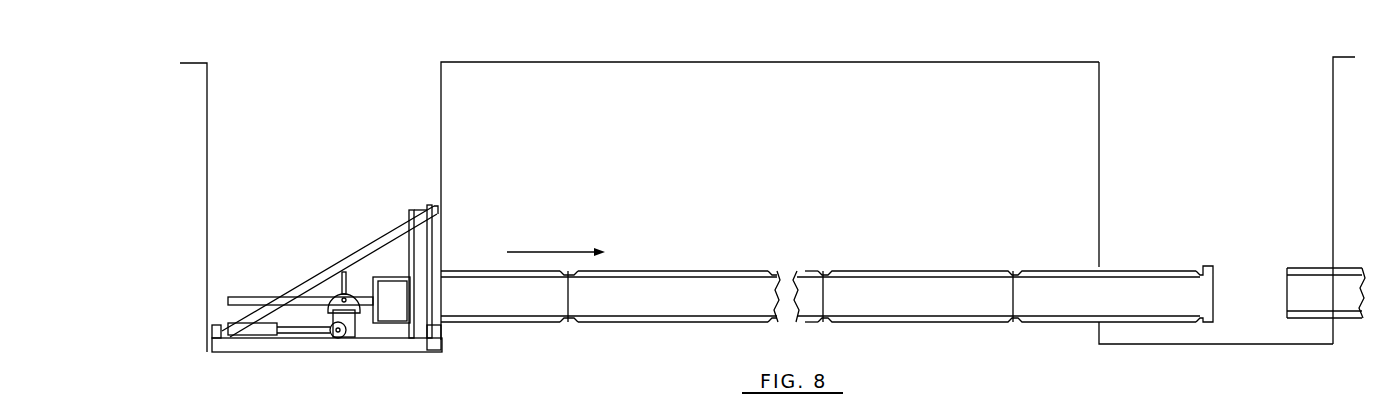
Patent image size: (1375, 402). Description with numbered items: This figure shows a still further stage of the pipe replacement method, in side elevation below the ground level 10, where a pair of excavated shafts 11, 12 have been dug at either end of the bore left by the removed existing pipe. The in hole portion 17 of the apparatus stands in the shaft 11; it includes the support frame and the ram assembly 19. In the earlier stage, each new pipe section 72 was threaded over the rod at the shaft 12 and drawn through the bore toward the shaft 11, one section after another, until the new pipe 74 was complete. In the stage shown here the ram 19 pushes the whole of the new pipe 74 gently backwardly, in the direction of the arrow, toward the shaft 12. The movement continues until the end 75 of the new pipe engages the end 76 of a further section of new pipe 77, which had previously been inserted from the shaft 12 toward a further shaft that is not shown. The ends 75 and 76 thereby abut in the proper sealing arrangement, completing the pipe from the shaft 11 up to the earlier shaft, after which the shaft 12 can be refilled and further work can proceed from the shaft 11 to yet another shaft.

The ground level 10 is at (193, 63).
The excavated shaft 11 is at (442, 152).
The excavated shaft 12 is at (1098, 143).
The in hole portion 17 is at (317, 266).
The ram assembly 19 is at (257, 345).
The new pipe section 72 is at (535, 305).
The new pipe 74 is at (703, 287).
The end of new pipe 75 is at (1218, 298).
The end of further section of new pipe 76 is at (1283, 276).
The further section of new pipe 77 is at (1335, 297).